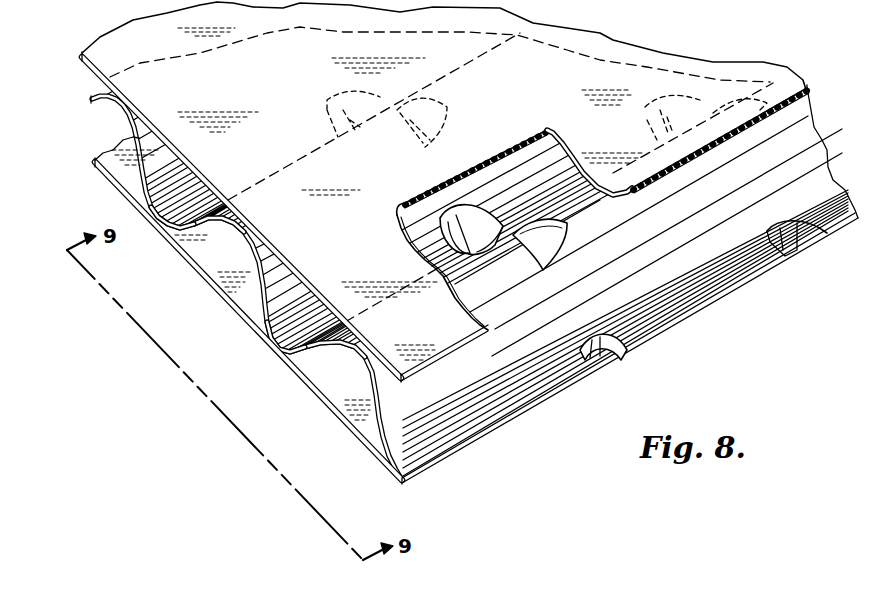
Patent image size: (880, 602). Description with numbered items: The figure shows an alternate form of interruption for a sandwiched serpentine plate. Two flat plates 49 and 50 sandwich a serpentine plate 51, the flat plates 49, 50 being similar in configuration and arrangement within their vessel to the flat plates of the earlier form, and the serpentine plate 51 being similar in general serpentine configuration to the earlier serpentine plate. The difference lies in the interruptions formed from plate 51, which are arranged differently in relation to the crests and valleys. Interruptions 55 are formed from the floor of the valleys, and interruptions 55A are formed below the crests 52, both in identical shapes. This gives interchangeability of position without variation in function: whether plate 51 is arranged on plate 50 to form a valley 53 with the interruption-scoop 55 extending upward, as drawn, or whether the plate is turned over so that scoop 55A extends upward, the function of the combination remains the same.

The plate 49 is at (107, 61).
The plate 50 is at (224, 305).
The serpentine plate 51 is at (400, 414).
The crest 52 is at (237, 229).
The valley 53 is at (160, 225).
The interruption 55 is at (476, 212).
The interruption 55A is at (545, 245).